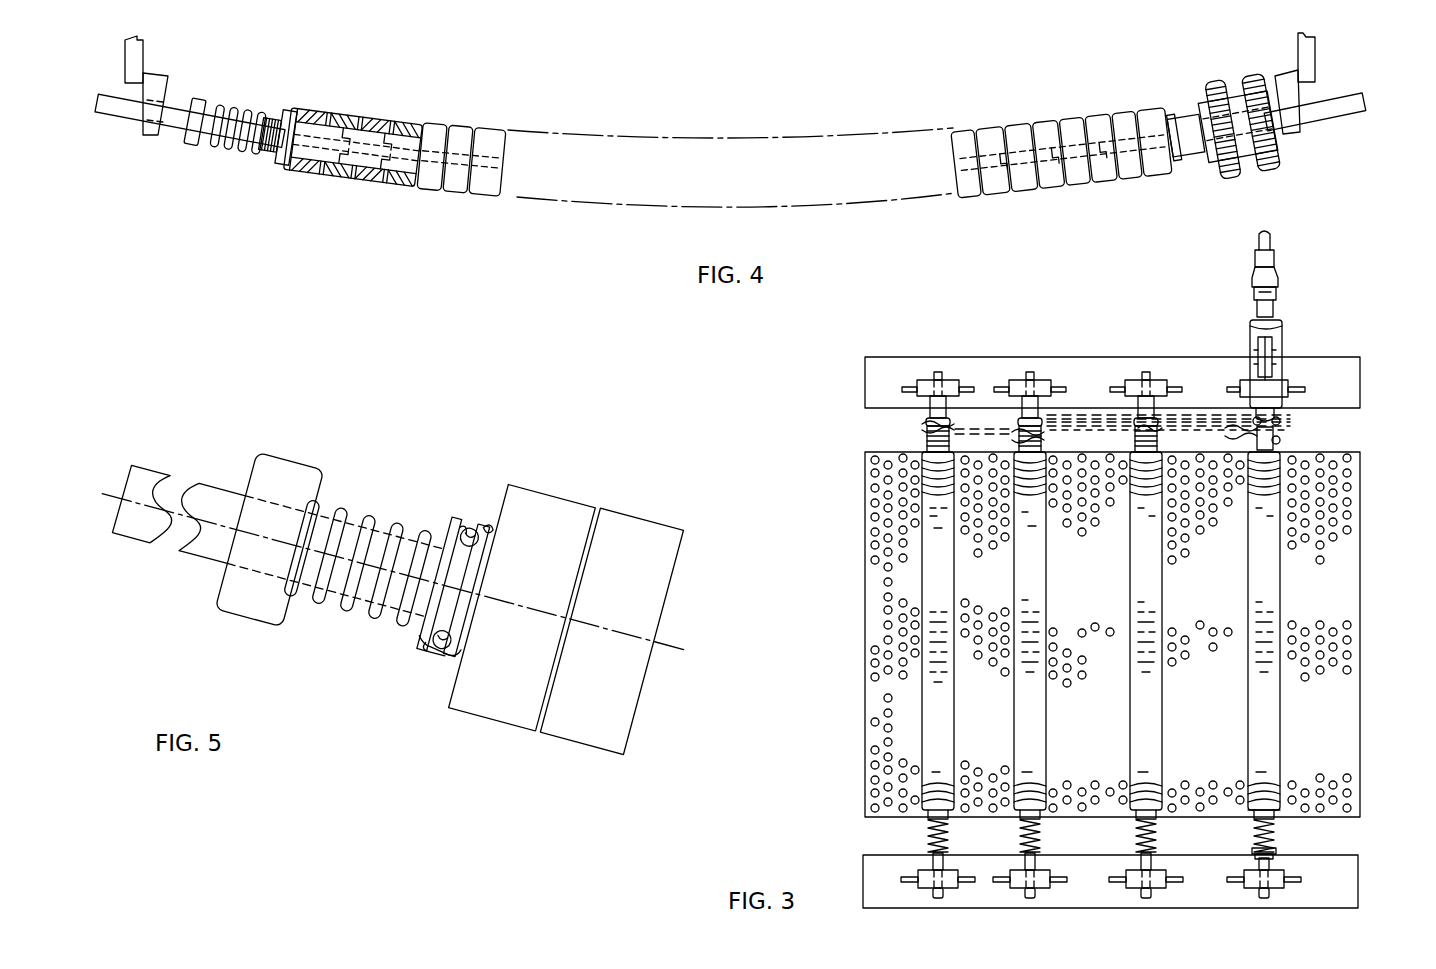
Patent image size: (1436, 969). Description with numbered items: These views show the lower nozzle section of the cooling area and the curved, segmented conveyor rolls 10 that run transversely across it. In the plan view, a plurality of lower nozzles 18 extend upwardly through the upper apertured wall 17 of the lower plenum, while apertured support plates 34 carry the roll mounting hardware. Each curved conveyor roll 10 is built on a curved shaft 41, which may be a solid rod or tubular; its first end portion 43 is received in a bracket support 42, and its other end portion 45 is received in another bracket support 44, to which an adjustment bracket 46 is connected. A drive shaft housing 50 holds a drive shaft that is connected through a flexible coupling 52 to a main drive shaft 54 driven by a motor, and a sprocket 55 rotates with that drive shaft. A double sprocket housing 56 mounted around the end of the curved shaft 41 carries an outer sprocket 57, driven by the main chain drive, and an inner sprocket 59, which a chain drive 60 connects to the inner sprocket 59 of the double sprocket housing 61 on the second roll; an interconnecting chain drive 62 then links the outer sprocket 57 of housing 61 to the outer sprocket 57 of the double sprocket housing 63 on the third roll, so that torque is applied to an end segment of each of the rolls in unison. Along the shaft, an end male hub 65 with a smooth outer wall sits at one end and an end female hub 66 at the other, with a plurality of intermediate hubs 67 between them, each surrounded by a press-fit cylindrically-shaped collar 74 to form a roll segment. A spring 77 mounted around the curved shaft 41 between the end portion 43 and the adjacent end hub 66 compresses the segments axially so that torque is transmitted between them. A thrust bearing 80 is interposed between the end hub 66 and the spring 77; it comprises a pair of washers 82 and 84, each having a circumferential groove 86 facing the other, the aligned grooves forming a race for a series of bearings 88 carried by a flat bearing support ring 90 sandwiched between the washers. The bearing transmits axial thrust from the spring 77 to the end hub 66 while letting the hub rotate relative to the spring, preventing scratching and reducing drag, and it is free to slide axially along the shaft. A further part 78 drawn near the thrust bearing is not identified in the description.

In FIG. 4, the conveyor roll 10 is at (763, 206).
In FIG. 3, the conveyor roll 10 is at (1012, 591).
In FIG. 3, the upper apertured wall 17 is at (865, 627).
In FIG. 3, the lower nozzles 18 is at (881, 578).
In FIG. 3, the apertured support plates 34 is at (875, 876).
In FIG. 4, the curved shaft 41 is at (1278, 130).
In FIG. 5, the curved shaft 41 is at (227, 497).
In FIG. 4, the bracket support 42 is at (155, 78).
In FIG. 3, the bracket support 42 is at (931, 876).
In FIG. 4, the first end portion 43 is at (93, 110).
In FIG. 5, the first end portion 43 is at (133, 532).
In FIG. 3, the first end portion 43 is at (1036, 892).
In FIG. 4, the bracket support 44 is at (1285, 78).
In FIG. 3, the bracket support 44 is at (1130, 388).
In FIG. 4, the other end portion 45 is at (1386, 70).
In FIG. 3, the other end portion 45 is at (935, 372).
In FIG. 3, the adjustment bracket 46 is at (1270, 366).
In FIG. 3, the drive shaft housing 50 is at (1282, 336).
In FIG. 3, the flexible coupling 52 is at (1277, 292).
In FIG. 3, the main drive shaft 54 is at (1270, 242).
In FIG. 3, the sprocket 55 is at (1282, 417).
In FIG. 3, the double sprocket housing 56 is at (1280, 438).
In FIG. 4, the outer sprocket 57 is at (1254, 70).
In FIG. 4, the inner sprocket 59 is at (1216, 78).
In FIG. 3, the inner sprocket 59 is at (925, 432).
In FIG. 3, the chain drive 60 is at (1218, 430).
In FIG. 3, the double sprocket housing 61 is at (1162, 427).
In FIG. 3, the interconnecting chain drive 62 is at (1084, 415).
In FIG. 3, the double sprocket housing 63 is at (1017, 432).
In FIG. 4, the end male hub 65 is at (1172, 112).
In FIG. 4, the end female hub 66 is at (288, 107).
In FIG. 5, the end female hub 66 is at (510, 708).
In FIG. 3, the end female hub 66 is at (1282, 814).
In FIG. 4, the intermediate hubs 67 is at (405, 183).
In FIG. 4, the cylindrically-shaped collar 74 is at (388, 94).
In FIG. 4, the spring 77 is at (218, 103).
In FIG. 5, the spring 77 is at (402, 517).
In FIG. 3, the spring 77 is at (1276, 846).
In FIG. 4, the washer 78 is at (195, 142).
In FIG. 5, the washer 78 is at (281, 462).
In FIG. 3, the washer 78 is at (1272, 855).
In FIG. 4, the thrust bearing 80 is at (268, 152).
In FIG. 5, the thrust bearing 80 is at (447, 655).
In FIG. 3, the thrust bearing 80 is at (926, 828).
In FIG. 5, the washer 82 is at (467, 530).
In FIG. 5, the washer 84 is at (492, 527).
In FIG. 5, the circumferential groove 86 is at (440, 645).
In FIG. 5, the bearings 88 is at (472, 527).
In FIG. 5, the flat bearing support ring 90 is at (460, 582).